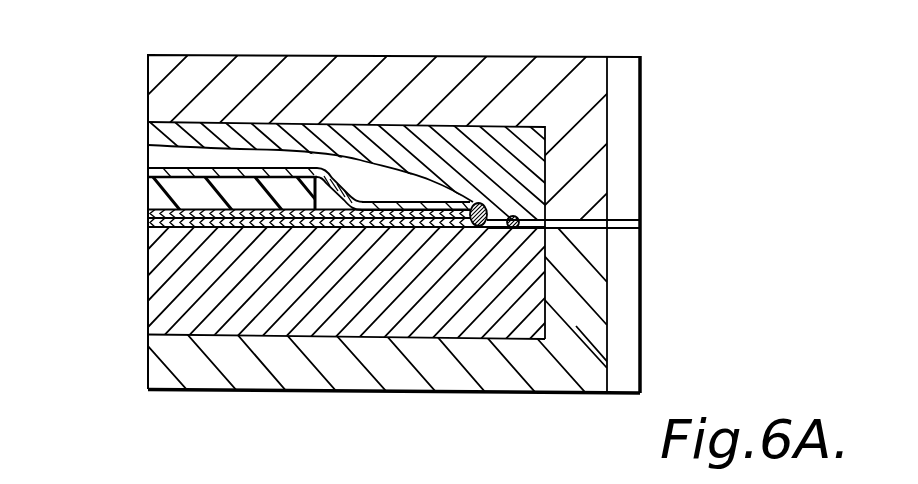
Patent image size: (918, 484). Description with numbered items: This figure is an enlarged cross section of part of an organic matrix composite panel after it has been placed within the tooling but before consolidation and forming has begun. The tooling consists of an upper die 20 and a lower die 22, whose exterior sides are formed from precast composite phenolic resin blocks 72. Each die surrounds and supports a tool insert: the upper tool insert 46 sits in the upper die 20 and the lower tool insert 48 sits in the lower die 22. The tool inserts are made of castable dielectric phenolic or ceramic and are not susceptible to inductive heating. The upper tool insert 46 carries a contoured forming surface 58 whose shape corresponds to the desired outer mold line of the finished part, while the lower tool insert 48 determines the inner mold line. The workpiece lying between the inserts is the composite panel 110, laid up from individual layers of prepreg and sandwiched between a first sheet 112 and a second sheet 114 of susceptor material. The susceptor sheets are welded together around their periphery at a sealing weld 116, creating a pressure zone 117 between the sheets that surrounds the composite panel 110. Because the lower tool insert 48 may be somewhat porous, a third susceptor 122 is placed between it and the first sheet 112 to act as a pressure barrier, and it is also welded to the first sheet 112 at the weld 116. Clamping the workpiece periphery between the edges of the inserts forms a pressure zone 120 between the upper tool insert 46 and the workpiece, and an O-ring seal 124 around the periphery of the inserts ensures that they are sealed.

The die 20 is at (130, 62).
The die 22 is at (130, 367).
The upper tool insert 46 is at (130, 128).
The lower tool insert 48 is at (130, 305).
The contoured forming surface 58 is at (304, 152).
The precast composite phenolic resin blocks 72 is at (627, 110).
The composite panel 110 is at (150, 192).
The first sheet 112 is at (150, 212).
The second sheet 114 is at (150, 172).
The sealing weld 116 is at (506, 227).
The pressure zone 117 is at (328, 197).
The pressure zone 120 is at (216, 158).
The third susceptor 122 is at (150, 222).
The O-ring seal 124 is at (545, 212).